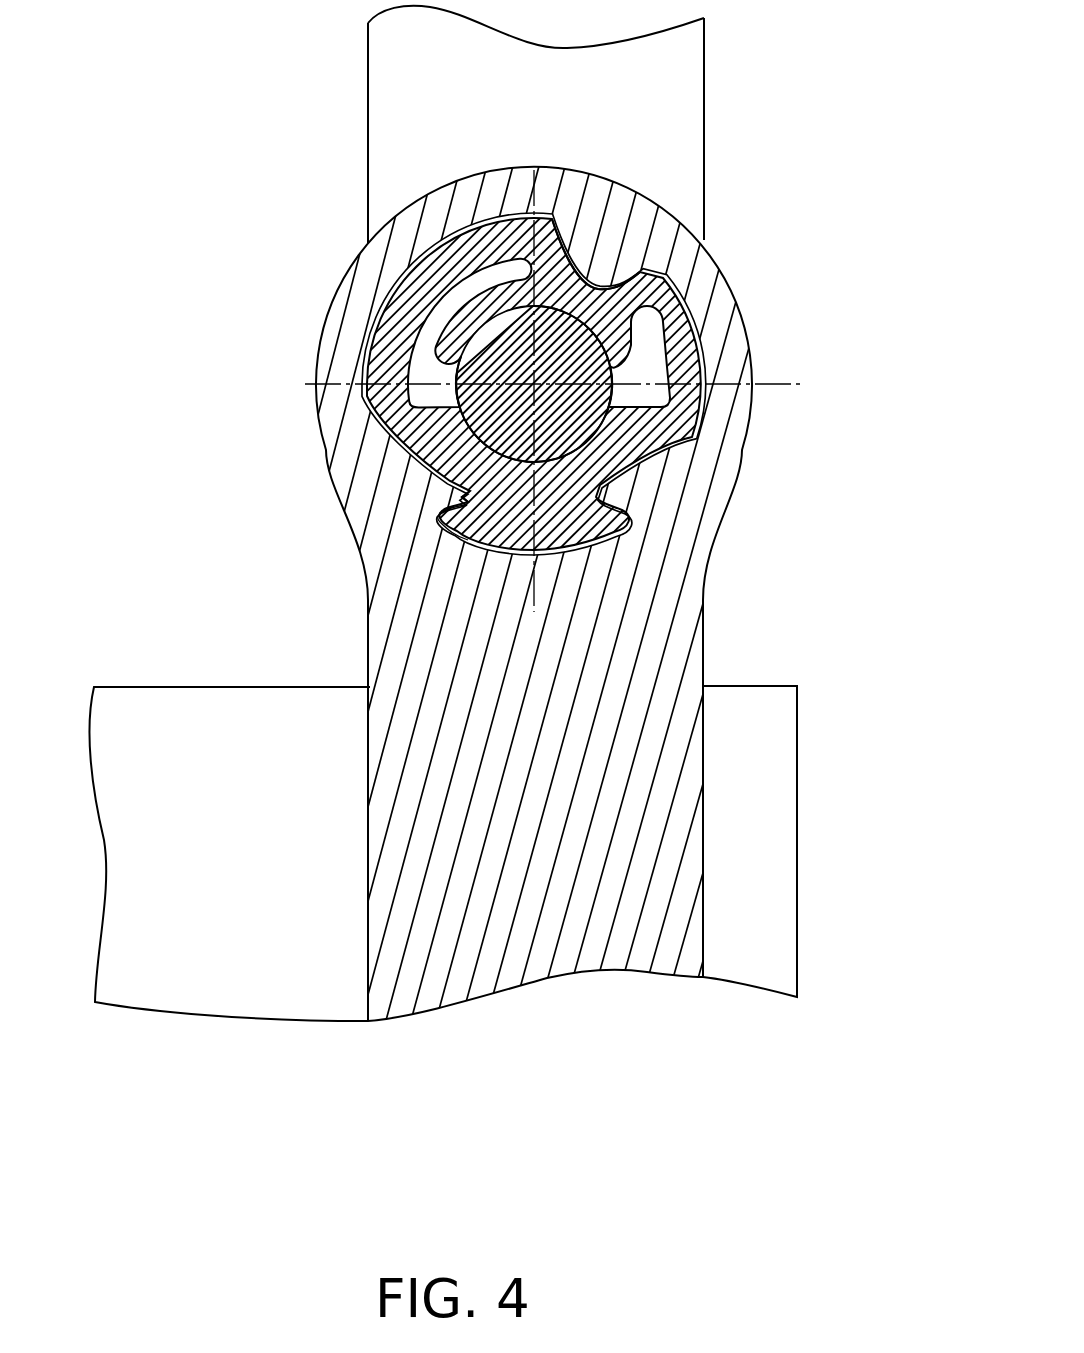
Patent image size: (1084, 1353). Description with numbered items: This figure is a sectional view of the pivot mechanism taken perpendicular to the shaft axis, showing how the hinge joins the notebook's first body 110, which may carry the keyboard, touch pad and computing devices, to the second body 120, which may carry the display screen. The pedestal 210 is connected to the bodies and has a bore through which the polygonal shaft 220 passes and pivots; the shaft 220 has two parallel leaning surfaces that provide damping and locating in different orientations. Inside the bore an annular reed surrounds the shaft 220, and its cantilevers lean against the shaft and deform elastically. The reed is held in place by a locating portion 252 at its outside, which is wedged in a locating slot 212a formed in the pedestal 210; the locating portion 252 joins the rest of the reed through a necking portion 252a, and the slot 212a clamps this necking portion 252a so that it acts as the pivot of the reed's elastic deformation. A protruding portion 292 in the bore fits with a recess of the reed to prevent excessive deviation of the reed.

The first body 110 is at (750, 833).
The second body 120 is at (675, 101).
The pedestal 210 is at (680, 530).
The locating slot 212a is at (470, 528).
The shaft 220 is at (615, 433).
The locating portion 252 is at (623, 553).
The necking portion 252a is at (470, 498).
The protruding portion 292 is at (598, 258).